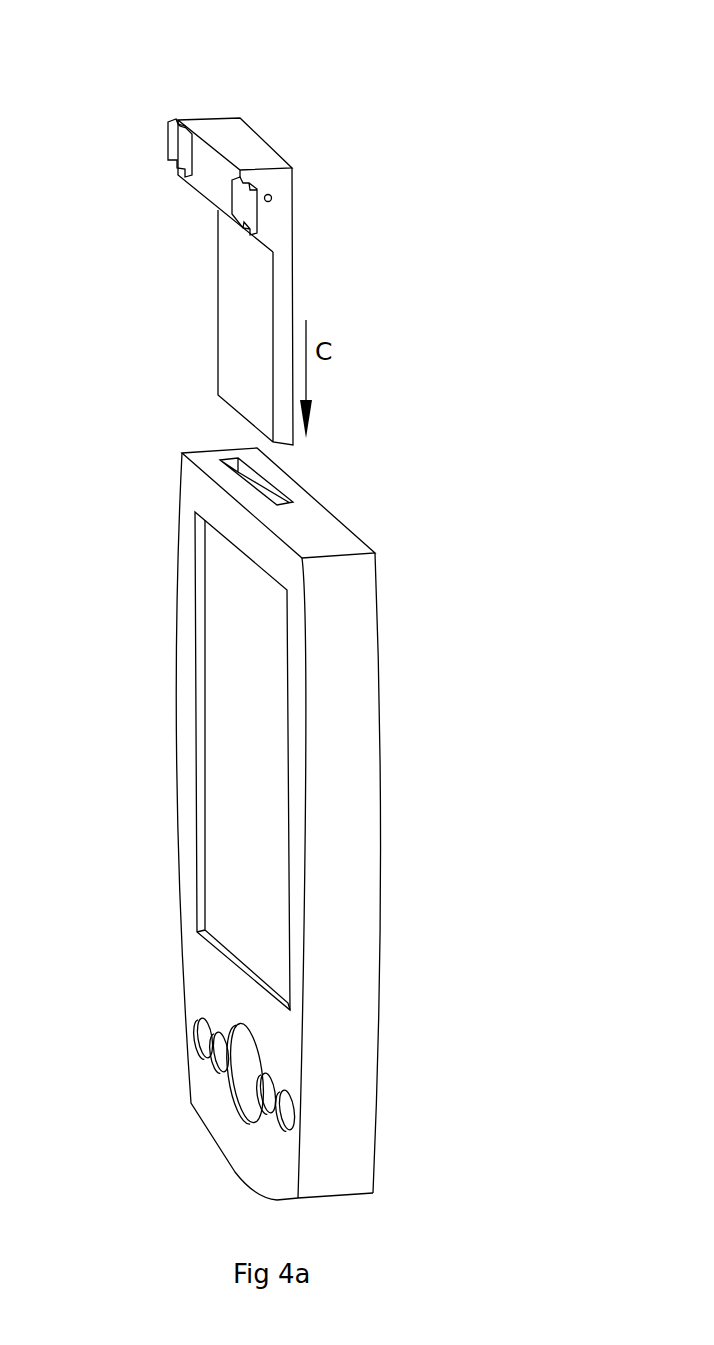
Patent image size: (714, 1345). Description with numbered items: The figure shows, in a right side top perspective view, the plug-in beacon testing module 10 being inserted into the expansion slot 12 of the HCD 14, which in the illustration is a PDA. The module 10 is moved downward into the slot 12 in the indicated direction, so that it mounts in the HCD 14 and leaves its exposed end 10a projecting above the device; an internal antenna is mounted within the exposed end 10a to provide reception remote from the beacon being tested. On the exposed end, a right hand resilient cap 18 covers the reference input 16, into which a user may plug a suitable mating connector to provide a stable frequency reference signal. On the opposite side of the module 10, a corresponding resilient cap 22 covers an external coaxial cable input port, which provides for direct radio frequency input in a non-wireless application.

The beacon testing module 10 is at (330, 295).
The exposed end 10a is at (235, 132).
The resilient cap 22 is at (180, 145).
The right hand resilient cap 18 is at (245, 210).
The reference input 16 is at (273, 198).
The expansion slot 12 is at (288, 495).
The HCD 14 is at (353, 815).